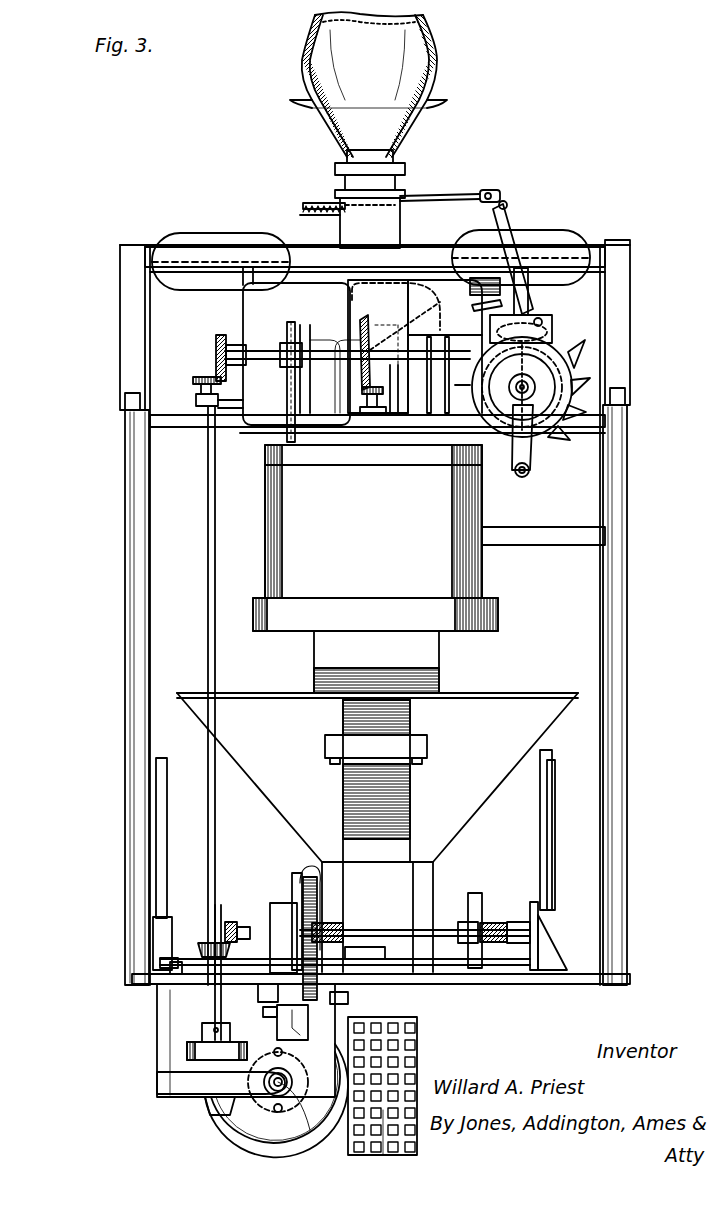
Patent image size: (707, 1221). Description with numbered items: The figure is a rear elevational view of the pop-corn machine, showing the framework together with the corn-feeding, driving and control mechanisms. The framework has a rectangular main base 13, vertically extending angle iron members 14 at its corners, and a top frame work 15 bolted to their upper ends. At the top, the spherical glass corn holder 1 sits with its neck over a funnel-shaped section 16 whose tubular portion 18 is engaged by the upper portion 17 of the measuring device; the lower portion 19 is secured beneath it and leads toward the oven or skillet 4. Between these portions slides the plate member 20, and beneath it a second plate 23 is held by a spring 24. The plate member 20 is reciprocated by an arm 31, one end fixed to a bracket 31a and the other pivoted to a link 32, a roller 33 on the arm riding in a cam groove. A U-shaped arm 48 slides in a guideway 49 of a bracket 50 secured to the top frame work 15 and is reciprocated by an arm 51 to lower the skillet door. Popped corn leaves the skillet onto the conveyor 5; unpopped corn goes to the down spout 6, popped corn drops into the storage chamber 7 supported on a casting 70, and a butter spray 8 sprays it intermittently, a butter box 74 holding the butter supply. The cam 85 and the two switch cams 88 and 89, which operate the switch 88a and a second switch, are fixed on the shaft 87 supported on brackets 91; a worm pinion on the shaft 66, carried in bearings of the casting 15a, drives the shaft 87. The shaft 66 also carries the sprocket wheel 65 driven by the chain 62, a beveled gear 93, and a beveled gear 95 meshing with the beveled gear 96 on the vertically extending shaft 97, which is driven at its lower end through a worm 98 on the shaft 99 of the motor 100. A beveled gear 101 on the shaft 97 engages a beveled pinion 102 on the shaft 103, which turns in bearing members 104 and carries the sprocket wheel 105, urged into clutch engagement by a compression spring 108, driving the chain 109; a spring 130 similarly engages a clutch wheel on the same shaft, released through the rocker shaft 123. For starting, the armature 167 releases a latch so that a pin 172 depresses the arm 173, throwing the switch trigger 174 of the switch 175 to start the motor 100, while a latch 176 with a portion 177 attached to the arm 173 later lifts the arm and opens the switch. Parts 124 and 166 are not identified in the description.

The corn holder 1 is at (413, 70).
The oven or skillet 4 is at (343, 520).
The conveyor 5 is at (370, 115).
The down spout 6 is at (412, 790).
The storage chamber 7 is at (500, 712).
The butter spray 8 is at (245, 862).
The main base 13 is at (132, 980).
The angle iron members 14 is at (631, 657).
The top frame work 15 is at (612, 250).
The casting 15a is at (252, 422).
The funnel-shaped section 16 is at (395, 126).
The upper portion of the measuring device 17 is at (345, 178).
The tubular portion 18 is at (395, 165).
The lower portion of the measuring device 19 is at (385, 220).
The plate member 20 is at (430, 196).
The second plate 23 is at (318, 204).
The spring 24 is at (318, 218).
The arm 31 is at (525, 236).
The bracket 31a is at (535, 472).
The link 32 is at (501, 192).
The roller 33 is at (466, 388).
The U-shaped arm 48 is at (429, 373).
The guideway 49 is at (385, 318).
The bracket 50 is at (352, 298).
The arm 51 is at (458, 346).
The chain 62 is at (292, 405).
The sprocket wheel 65 is at (289, 364).
The shaft 66 is at (270, 355).
The casting 70 is at (440, 882).
The butter box 74 is at (556, 530).
The cam 85 is at (540, 425).
The shaft 87 is at (530, 380).
The switch cam 88 is at (545, 345).
The switch 88a is at (541, 320).
The switch cam 89 is at (575, 405).
The brackets 91 is at (535, 305).
The beveled gear 93 is at (364, 330).
The beveled gear 95 is at (218, 338).
The beveled gear 96 is at (206, 377).
The vertically extending shaft 97 is at (207, 473).
The worm 98 is at (320, 1118).
The shaft 99 is at (270, 1085).
The motor 100 is at (250, 1130).
The beveled gear 101 is at (212, 940).
The beveled pinion 102 is at (245, 925).
The shaft 103 is at (470, 905).
The bearing members 104 is at (235, 926).
The sprocket wheel 105 is at (296, 890).
The compression spring 108 is at (325, 925).
The chain 109 is at (312, 866).
The rocker shaft 123 is at (445, 960).
The stud 124 is at (487, 960).
The spring 130 is at (530, 910).
The switch 166 is at (262, 998).
The armature 167 is at (268, 1014).
The pin 172 is at (300, 958).
The arm 173 is at (345, 1000).
The switch trigger 174 is at (296, 1038).
The switch 175 is at (348, 1025).
The latch 176 is at (318, 905).
The portion 177 is at (350, 957).